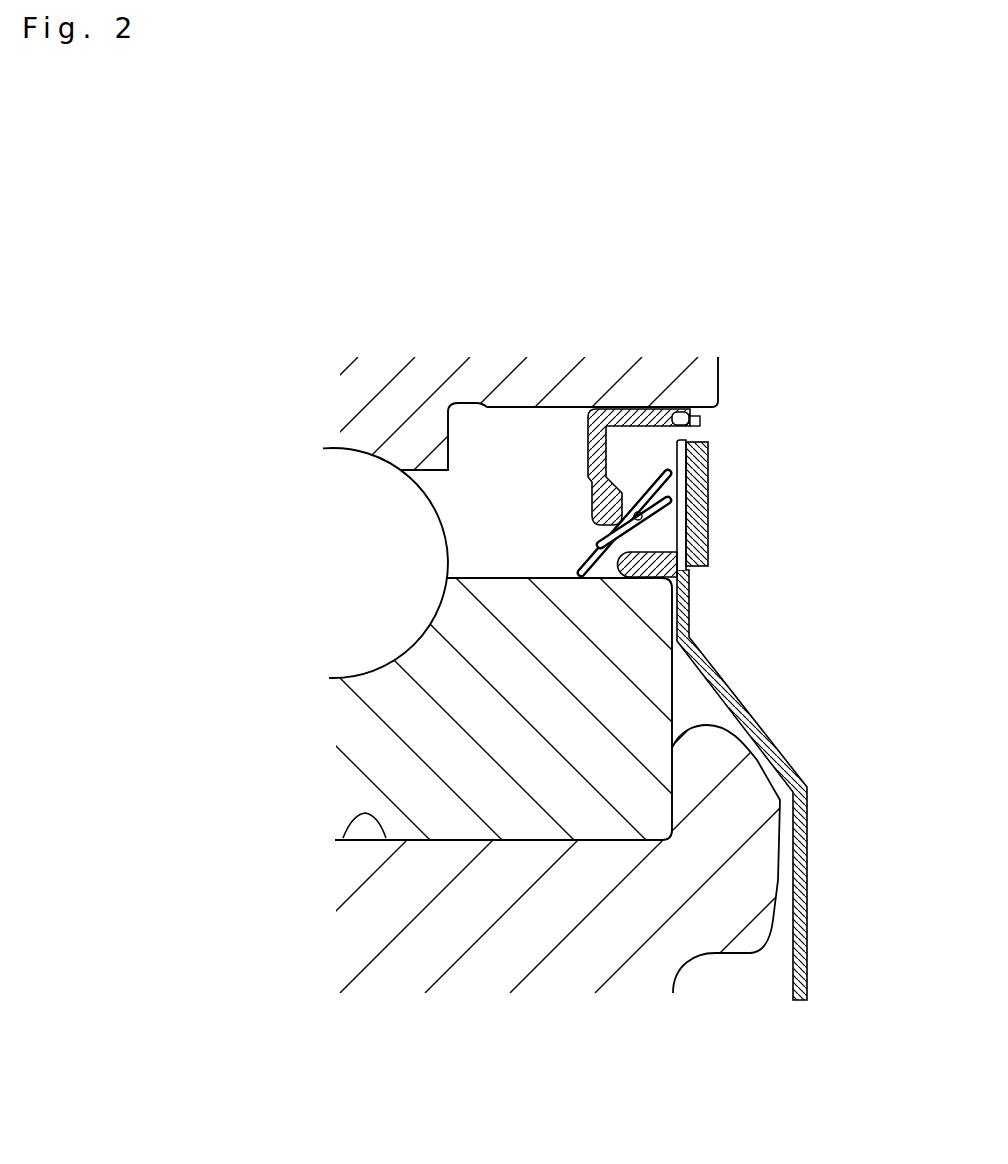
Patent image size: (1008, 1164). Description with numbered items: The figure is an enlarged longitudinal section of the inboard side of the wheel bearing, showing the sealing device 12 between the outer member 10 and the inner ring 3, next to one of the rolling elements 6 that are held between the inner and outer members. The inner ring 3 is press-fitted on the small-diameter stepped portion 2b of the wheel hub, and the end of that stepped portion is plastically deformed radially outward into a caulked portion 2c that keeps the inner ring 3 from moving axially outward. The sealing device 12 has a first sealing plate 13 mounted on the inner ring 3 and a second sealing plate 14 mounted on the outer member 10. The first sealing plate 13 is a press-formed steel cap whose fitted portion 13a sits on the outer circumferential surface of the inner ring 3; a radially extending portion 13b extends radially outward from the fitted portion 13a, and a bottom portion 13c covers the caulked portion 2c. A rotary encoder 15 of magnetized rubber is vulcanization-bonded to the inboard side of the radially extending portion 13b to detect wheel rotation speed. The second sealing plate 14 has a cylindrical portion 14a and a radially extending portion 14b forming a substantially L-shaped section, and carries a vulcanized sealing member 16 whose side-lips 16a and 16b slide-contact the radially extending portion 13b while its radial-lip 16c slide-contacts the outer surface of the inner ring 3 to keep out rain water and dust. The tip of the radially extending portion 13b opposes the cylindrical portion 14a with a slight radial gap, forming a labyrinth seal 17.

The stepped portion 2b is at (337, 840).
The caulked portion 2c is at (747, 797).
The inner ring 3 is at (453, 762).
The rolling elements 6 is at (340, 463).
The outer member 10 is at (458, 378).
The sealing device 12 is at (720, 434).
The first sealing plate 13 is at (756, 720).
The fitted portion 13a is at (690, 555).
The radially extending portion 13b is at (690, 505).
The bottom portion 13c is at (742, 710).
The second sealing plate 14 is at (621, 362).
The cylindrical portion 14a is at (632, 420).
The radially extending portion 14b is at (578, 425).
The rotary encoder 15 is at (705, 458).
The sealing member 16 is at (480, 527).
The side-lip 16a is at (590, 474).
The side-lip 16b is at (595, 503).
The radial-lip 16c is at (585, 548).
The labyrinth seal 17 is at (712, 428).